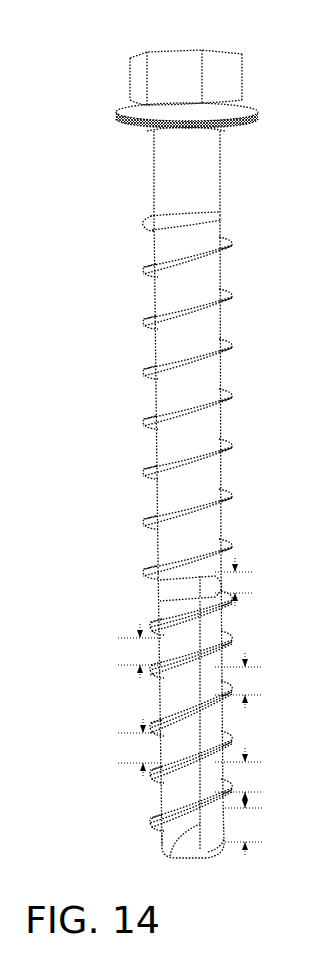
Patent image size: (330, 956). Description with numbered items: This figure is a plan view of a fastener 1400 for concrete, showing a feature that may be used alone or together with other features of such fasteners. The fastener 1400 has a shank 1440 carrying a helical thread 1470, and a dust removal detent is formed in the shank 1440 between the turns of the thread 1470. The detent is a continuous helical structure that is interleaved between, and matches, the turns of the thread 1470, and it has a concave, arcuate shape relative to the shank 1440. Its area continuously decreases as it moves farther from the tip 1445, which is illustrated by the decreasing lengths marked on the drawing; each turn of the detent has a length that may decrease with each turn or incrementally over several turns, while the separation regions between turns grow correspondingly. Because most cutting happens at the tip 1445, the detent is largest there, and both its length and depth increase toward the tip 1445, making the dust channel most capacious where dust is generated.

The fastener 1400 is at (178, 42).
The shank 1440 is at (226, 182).
The thread 1470 is at (228, 645).
The tip 1445 is at (212, 855).